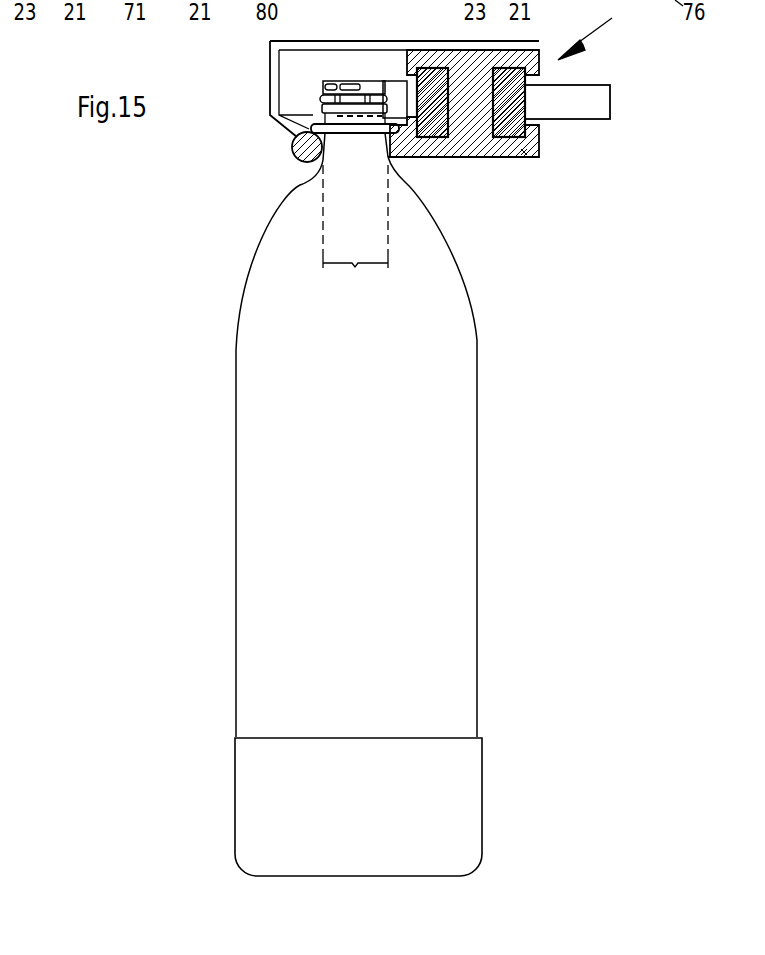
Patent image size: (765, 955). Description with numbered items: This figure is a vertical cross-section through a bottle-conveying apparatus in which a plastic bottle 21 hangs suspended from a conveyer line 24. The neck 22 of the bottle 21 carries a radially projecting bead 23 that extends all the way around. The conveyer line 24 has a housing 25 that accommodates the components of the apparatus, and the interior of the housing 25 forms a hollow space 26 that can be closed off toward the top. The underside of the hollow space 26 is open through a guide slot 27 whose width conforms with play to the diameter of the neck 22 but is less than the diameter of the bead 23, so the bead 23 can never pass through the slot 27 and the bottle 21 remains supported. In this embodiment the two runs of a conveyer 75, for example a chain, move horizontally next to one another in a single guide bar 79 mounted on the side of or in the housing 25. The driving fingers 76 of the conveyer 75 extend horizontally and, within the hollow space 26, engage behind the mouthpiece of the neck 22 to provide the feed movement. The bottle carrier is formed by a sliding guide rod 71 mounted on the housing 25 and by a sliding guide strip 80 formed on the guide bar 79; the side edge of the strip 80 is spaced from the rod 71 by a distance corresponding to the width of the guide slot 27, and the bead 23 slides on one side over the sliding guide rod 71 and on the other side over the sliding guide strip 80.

The bottle 21 is at (445, 300).
The neck 22 is at (363, 87).
The bead 23 is at (333, 132).
The conveyer line 24 is at (595, 30).
The housing 25 is at (320, 47).
The hollow space 26 is at (298, 68).
The guide slot 27 is at (355, 233).
The sliding guide rod 71 is at (292, 152).
The conveyer 75 is at (508, 122).
The driving fingers 76 is at (390, 93).
The guide bar 79 is at (480, 68).
The sliding guide strip 80 is at (412, 147).